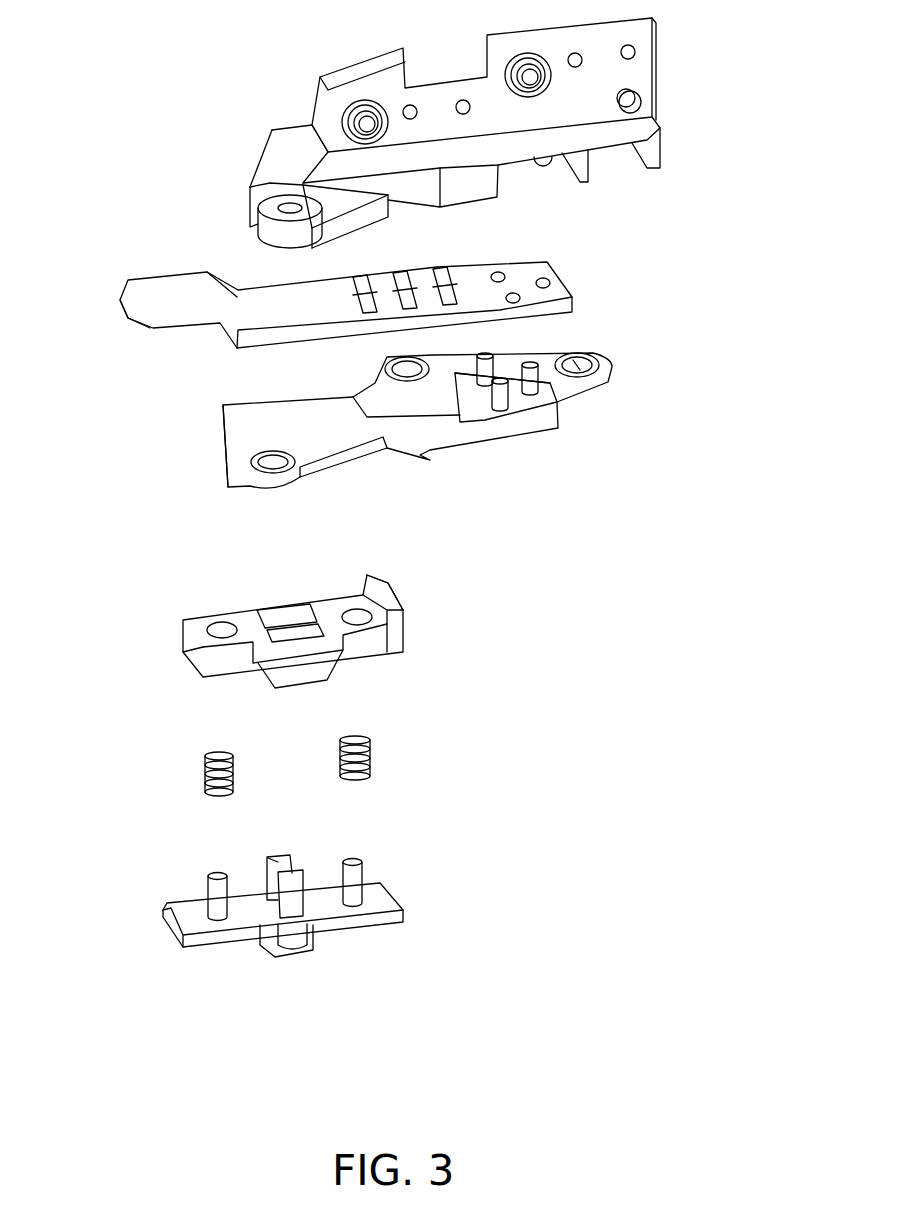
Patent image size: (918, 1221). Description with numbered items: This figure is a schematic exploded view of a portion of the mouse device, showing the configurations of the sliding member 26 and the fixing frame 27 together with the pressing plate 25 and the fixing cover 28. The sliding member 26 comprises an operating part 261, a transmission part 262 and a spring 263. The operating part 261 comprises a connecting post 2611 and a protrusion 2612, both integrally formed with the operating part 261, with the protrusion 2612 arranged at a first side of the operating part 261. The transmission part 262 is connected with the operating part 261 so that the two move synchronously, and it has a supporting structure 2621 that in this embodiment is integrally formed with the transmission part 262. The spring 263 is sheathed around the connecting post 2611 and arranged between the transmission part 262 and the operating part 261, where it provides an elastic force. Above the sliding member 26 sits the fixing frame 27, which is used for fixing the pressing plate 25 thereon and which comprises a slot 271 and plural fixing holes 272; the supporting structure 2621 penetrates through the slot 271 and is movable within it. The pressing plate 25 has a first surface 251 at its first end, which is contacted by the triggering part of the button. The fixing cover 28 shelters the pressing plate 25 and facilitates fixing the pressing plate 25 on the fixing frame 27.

The fixing cover 28 is at (647, 72).
The pressing plate 25 is at (567, 257).
The first surface 251 is at (143, 302).
The fixing frame 27 is at (416, 423).
The slot 271 is at (442, 427).
The fixing holes 272 is at (587, 358).
The sliding member 26 is at (385, 766).
The transmission part 262 is at (338, 632).
The supporting structure 2621 is at (398, 620).
The spring 263 is at (372, 748).
The operating part 261 is at (321, 888).
The connecting post 2611 is at (357, 860).
The protrusion 2612 is at (369, 940).